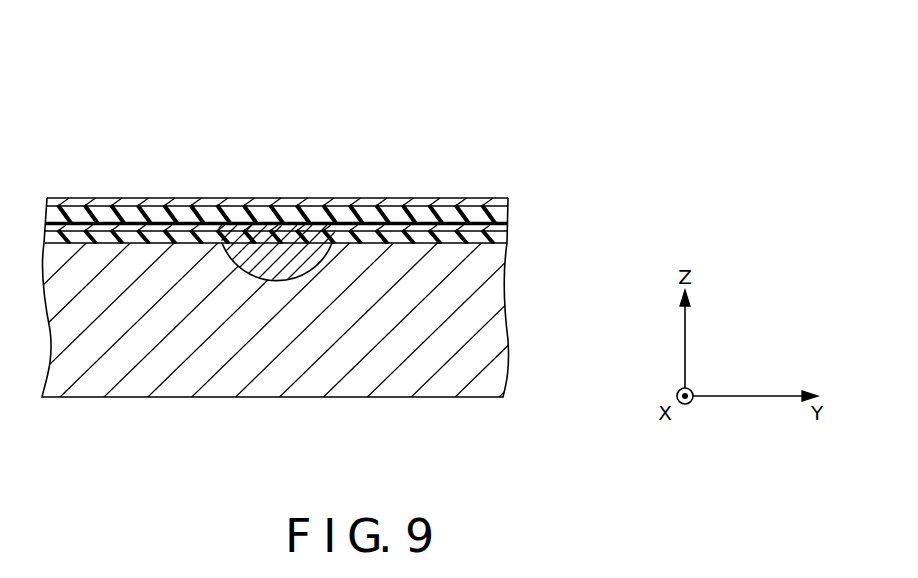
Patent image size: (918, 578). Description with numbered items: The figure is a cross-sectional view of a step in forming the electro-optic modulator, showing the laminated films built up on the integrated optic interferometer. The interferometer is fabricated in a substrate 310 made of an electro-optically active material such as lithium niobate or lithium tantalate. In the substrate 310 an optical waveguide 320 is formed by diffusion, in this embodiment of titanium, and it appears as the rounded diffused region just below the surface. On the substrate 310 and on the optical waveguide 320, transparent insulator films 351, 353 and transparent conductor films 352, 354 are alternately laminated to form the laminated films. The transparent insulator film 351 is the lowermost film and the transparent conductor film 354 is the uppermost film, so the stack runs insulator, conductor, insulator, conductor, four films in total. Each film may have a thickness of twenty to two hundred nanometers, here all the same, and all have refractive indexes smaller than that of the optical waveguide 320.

The substrate 310 is at (495, 326).
The optical waveguide 320 is at (281, 248).
The transparent insulator film 351 is at (507, 237).
The transparent conductor film 352 is at (507, 227).
The transparent insulator film 353 is at (507, 211).
The transparent conductor film 354 is at (508, 201).